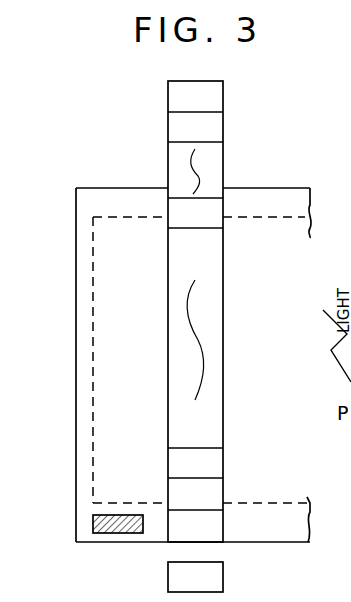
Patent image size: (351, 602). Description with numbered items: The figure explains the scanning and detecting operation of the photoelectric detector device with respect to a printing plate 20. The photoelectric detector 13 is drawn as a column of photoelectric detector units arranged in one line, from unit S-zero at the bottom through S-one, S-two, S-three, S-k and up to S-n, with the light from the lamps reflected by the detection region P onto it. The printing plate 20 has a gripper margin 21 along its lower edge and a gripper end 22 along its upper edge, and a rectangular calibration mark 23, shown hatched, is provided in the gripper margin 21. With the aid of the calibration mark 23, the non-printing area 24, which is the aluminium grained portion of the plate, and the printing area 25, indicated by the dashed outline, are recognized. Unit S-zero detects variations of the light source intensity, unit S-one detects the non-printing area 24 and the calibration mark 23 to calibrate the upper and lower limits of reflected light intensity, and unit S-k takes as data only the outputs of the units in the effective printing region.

The photoelectric detector 13 is at (206, 74).
The printing plate 20 is at (284, 545).
The gripper margin 21 is at (253, 533).
The gripper end 22 is at (244, 198).
The calibration mark 23 is at (117, 533).
The non-printing area 24 is at (76, 281).
The printing area 25 is at (93, 352).